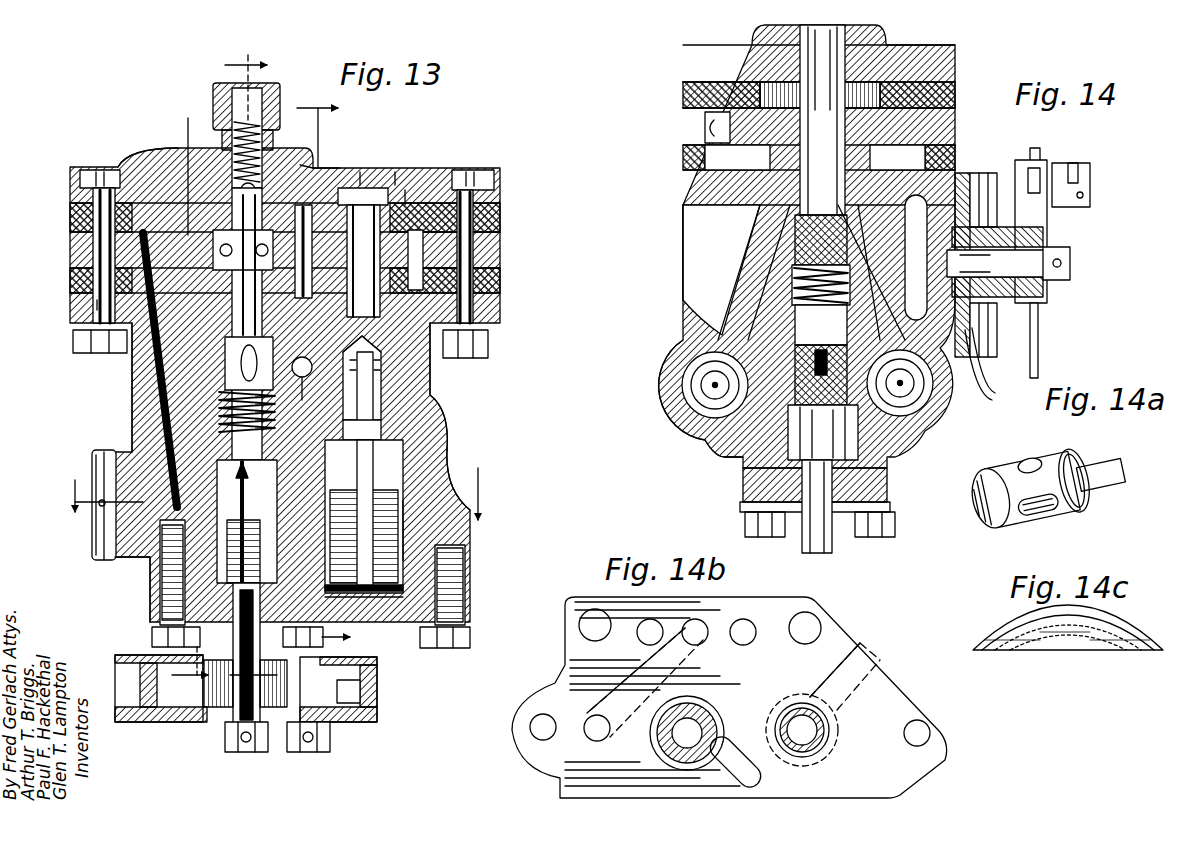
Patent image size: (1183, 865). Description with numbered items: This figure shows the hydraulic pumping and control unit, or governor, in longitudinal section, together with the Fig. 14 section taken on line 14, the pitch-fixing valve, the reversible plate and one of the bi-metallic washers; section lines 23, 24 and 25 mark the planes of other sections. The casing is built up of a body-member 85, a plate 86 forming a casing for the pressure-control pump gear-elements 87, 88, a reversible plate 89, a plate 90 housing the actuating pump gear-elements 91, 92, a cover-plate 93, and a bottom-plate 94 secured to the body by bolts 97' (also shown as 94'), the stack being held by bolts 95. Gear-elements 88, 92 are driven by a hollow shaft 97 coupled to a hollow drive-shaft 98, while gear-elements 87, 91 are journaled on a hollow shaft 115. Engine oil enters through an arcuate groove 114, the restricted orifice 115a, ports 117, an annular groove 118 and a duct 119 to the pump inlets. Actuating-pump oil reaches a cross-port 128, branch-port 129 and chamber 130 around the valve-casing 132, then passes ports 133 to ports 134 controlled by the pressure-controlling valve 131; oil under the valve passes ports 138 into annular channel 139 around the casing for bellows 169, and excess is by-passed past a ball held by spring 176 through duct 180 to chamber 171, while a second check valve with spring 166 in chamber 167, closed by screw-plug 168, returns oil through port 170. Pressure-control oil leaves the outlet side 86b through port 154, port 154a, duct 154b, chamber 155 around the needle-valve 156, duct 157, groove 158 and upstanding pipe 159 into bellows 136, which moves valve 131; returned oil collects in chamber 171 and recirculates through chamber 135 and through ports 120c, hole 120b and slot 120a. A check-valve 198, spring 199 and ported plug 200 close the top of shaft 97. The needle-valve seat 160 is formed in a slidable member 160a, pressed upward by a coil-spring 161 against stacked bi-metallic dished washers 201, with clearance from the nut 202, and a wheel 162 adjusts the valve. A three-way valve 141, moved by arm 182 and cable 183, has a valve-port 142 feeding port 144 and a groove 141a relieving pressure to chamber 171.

In FIG. 13, the section line 14— 14 is at (259, 365).
In FIG. 13, the section line 23— 23 is at (190, 400).
In FIG. 13, the section line 24— 24 is at (323, 373).
In FIG. 13, the section line 25— 25 is at (279, 494).
In FIG. 13, the body-member 85 is at (463, 462).
In FIG. 14, the body-member 85 is at (688, 273).
In FIG. 13, the plate 86 is at (500, 283).
In FIG. 14, the plate 86 is at (957, 157).
In FIG. 14, the outlet side of pressure-control pump chamber 86b is at (733, 165).
In FIG. 13, the gear-element 87 is at (408, 275).
In FIG. 13, the gear-element 88 is at (140, 345).
In FIG. 13, the reversible plate 89 is at (500, 252).
In FIG. 14, the reversible plate 89 is at (957, 130).
In FIG. 13, the plate 90 is at (70, 218).
In FIG. 14, the plate 90 is at (957, 100).
In FIG. 13, the gear-element 91 is at (452, 174).
In FIG. 13, the gear-element 92 is at (325, 173).
In FIG. 14, the gear-element 92 is at (700, 80).
In FIG. 13, the cover-plate 93 is at (70, 181).
In FIG. 14, the cover-plate 93 is at (957, 71).
In FIG. 14, the bottom-plate 94 is at (796, 506).
In FIG. 13, the bolt 94' is at (468, 596).
In FIG. 13, the bolts 95 is at (97, 305).
In FIG. 13, the hollow shaft 97 is at (367, 317).
In FIG. 14, the hollow shaft 97 is at (822, 120).
In FIG. 13, the bolts 97' is at (150, 572).
In FIG. 14B, the hollow drive-shaft 98 is at (900, 692).
In FIG. 13, the arcuate groove 114 is at (365, 175).
In FIG. 13, the hollow shaft 115 is at (400, 182).
In FIG. 14B, the hollow shaft 115 is at (830, 748).
In FIG. 13, the small orifice 115a is at (397, 170).
In FIG. 13, the ports 117 is at (363, 252).
In FIG. 13, the annular groove 118 is at (470, 233).
In FIG. 14B, the annular groove 118 is at (835, 722).
In FIG. 14B, the duct 119 is at (790, 766).
In FIG. 14B, the slot 120a is at (728, 737).
In FIG. 14B, the hole 120b is at (690, 760).
In FIG. 13, the ports 120c is at (302, 165).
In FIG. 14B, the ports 120c is at (665, 752).
In FIG. 13, the cross-port 128 is at (304, 357).
In FIG. 13, the branch-port 129 is at (308, 395).
In FIG. 13, the chamber 130 is at (488, 345).
In FIG. 13, the pressure-controlling valve 131 is at (375, 432).
In FIG. 13, the valve-casing 132 is at (390, 382).
In FIG. 13, the ports 133 is at (434, 398).
In FIG. 13, the ports 134 is at (390, 450).
In FIG. 13, the chamber 135 is at (447, 483).
In FIG. 13, the bellows 136 is at (405, 583).
In FIG. 13, the ports 138 is at (420, 540).
In FIG. 13, the annular channel 139 is at (475, 520).
In FIG. 14, the three-way valve 141 is at (992, 180).
In FIG. 14A, the three-way valve 141 is at (1022, 462).
In FIG. 14, the longitudinal groove 141a is at (933, 264).
In FIG. 14A, the longitudinal groove 141a is at (1039, 525).
In FIG. 14, the valve-port 142 is at (1008, 262).
In FIG. 14A, the valve-port 142 is at (1040, 462).
In FIG. 14, the port 144 is at (914, 205).
In FIG. 13, the port 154 is at (95, 247).
In FIG. 14, the port 154 is at (705, 130).
In FIG. 13, the port 154a is at (95, 280).
In FIG. 13, the duct 154b is at (75, 345).
In FIG. 13, the chamber 155 is at (215, 470).
In FIG. 13, the needle-valve 156 is at (150, 560).
In FIG. 14, the needle-valve 156 is at (720, 442).
In FIG. 13, the duct 157 is at (350, 615).
In FIG. 13, the groove 158 is at (360, 622).
In FIG. 13, the upstanding pipe 159 is at (405, 555).
In FIG. 13, the seat 160 is at (185, 460).
In FIG. 14, the seat 160 is at (760, 340).
In FIG. 13, the slidable member 160a is at (180, 440).
In FIG. 13, the coil-spring 161 is at (100, 557).
In FIG. 13, the wheel 162 is at (353, 722).
In FIG. 14, the spring 166 is at (885, 405).
In FIG. 14, the chamber 167 is at (908, 400).
In FIG. 13, the screw-plug 168 is at (100, 540).
In FIG. 14, the bellows 169 is at (680, 400).
In FIG. 14, the port 170 is at (753, 302).
In FIG. 13, the chamber 171 is at (152, 382).
In FIG. 14, the chamber 171 is at (793, 240).
In FIG. 14, the spring 176 is at (715, 382).
In FIG. 14, the duct 180 is at (935, 400).
In FIG. 14, the arm 182 is at (1040, 228).
In FIG. 14, the cable 183 is at (1038, 372).
In FIG. 13, the check-valve 198 is at (200, 137).
In FIG. 13, the spring 199 is at (222, 95).
In FIG. 13, the plug 200 is at (268, 86).
In FIG. 13, the bi-metallic dished washers 201 is at (160, 398).
In FIG. 14, the bi-metallic dished washers 201 is at (821, 275).
In FIG. 14C, the bi-metallic dished washers 201 is at (1068, 627).
In FIG. 13, the nut 202 is at (160, 626).